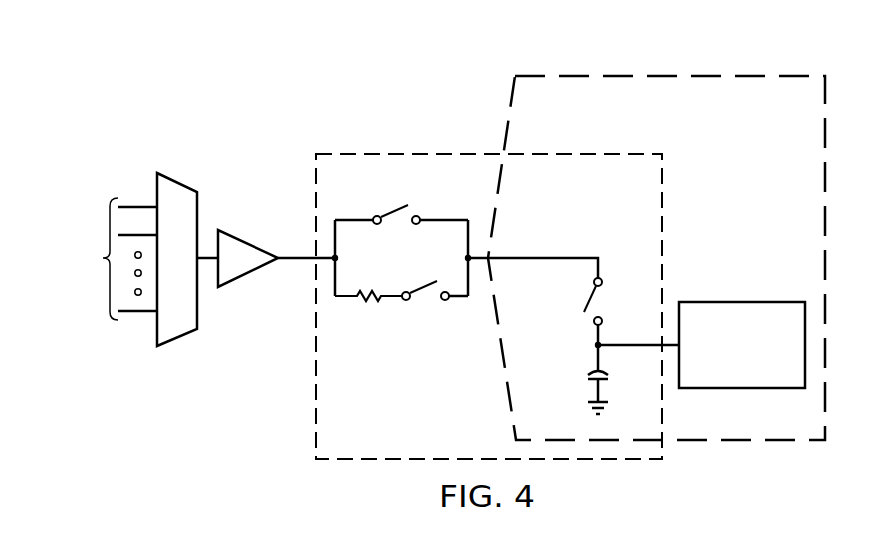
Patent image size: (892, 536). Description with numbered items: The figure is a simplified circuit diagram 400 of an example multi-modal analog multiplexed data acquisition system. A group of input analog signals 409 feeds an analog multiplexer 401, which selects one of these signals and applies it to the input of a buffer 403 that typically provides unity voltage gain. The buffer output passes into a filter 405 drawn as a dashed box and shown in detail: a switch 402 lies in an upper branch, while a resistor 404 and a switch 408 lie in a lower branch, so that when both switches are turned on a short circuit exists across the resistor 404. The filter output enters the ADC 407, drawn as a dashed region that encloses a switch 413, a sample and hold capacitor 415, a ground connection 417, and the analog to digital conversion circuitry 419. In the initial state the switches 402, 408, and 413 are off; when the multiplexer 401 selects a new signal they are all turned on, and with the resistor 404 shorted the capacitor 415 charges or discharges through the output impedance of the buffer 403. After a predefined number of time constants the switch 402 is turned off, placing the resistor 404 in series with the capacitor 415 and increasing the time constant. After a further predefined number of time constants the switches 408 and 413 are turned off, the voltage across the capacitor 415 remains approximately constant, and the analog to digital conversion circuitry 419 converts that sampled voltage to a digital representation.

The circuit 400 is at (249, 78).
The multiplexer 401 is at (177, 184).
The switch 402 is at (400, 210).
The buffer 403 is at (248, 242).
The resistor 404 is at (365, 302).
The filter 405 is at (428, 147).
The ADC 407 is at (674, 68).
The switch 408 is at (423, 287).
The input analog signals 409 is at (91, 248).
The switch 413 is at (585, 296).
The capacitor Cs-h 415 is at (587, 375).
The ground connection 417 is at (587, 405).
The analog to digital conversion circuitry 419 is at (743, 300).